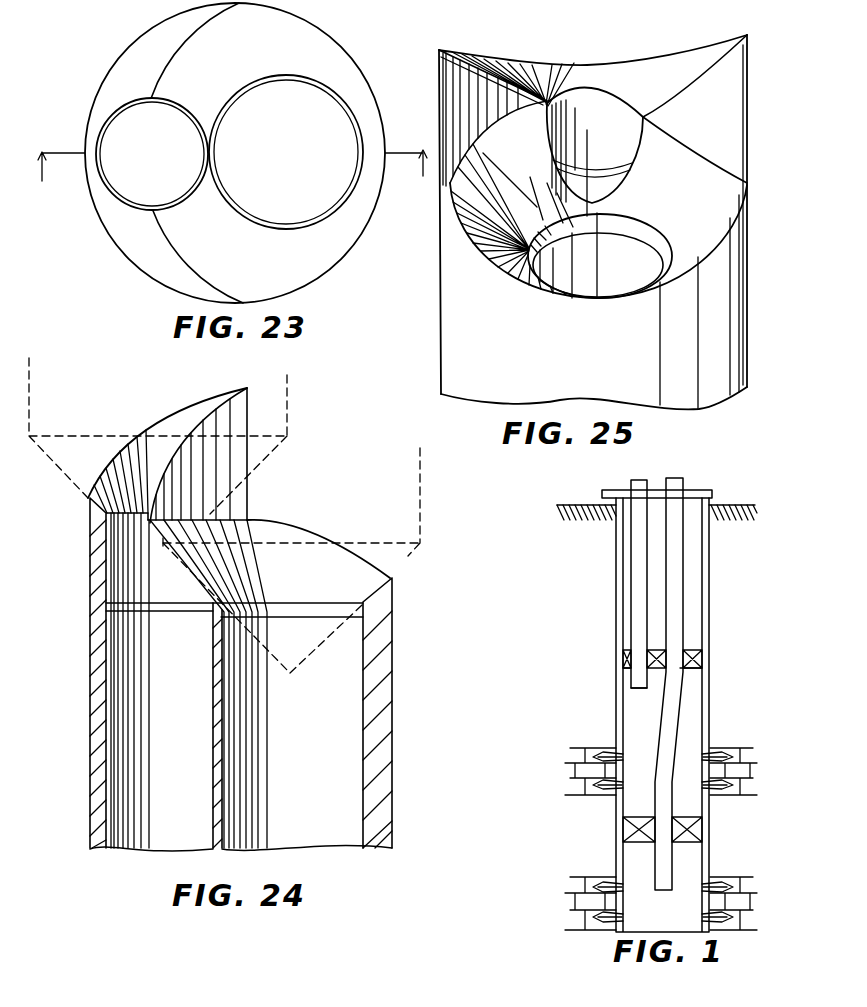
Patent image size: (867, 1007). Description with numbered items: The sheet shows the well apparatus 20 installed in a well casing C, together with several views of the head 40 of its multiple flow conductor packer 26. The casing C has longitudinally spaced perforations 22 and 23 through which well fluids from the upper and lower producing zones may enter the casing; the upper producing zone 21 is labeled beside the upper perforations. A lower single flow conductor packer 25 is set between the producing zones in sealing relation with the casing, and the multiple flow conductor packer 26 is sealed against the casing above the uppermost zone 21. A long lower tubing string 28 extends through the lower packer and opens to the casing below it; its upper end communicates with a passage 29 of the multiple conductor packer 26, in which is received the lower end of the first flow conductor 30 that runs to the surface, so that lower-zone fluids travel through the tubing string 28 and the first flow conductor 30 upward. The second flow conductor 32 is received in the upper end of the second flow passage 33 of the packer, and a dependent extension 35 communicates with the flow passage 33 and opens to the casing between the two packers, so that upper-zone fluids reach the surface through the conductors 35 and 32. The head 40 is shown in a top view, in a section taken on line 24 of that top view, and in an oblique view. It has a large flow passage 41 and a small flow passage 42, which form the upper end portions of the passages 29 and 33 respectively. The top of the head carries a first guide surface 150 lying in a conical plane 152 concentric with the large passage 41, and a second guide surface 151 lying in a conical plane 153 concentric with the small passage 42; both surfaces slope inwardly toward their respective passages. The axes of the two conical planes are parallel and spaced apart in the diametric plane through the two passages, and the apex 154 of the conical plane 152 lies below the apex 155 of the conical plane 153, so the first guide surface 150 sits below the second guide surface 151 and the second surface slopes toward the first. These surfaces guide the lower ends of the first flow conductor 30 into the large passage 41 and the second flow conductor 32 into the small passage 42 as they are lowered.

In FIG. 23, the head 40 is at (110, 67).
In FIG. 25, the head 40 is at (736, 285).
In FIG. 23, the large flow passage 41 is at (285, 79).
In FIG. 25, the large flow passage 41 is at (657, 258).
In FIG. 24, the large flow passage 41 is at (353, 725).
In FIG. 23, the small flow passage 42 is at (178, 110).
In FIG. 25, the small flow passage 42 is at (634, 118).
In FIG. 24, the small flow passage 42 is at (117, 743).
In FIG. 23, the first guide surface 150 is at (313, 267).
In FIG. 25, the first guide surface 150 is at (706, 177).
In FIG. 24, the first guide surface 150 is at (343, 558).
In FIG. 23, the second guide surface 151 is at (132, 248).
In FIG. 25, the second guide surface 151 is at (692, 57).
In FIG. 24, the second guide surface 151 is at (190, 413).
In FIG. 24, the conical plane 152 is at (412, 557).
In FIG. 24, the conical plane 153 is at (277, 447).
In FIG. 24, the apex 154 is at (288, 675).
In FIG. 24, the apex 155 is at (160, 560).
In FIG. 23, the section line 24 is at (232, 165).
In FIG. 1, the well casing C is at (705, 596).
In FIG. 1, the well apparatus 20 is at (627, 591).
In FIG. 1, the first flow conductor 30 is at (683, 562).
In FIG. 1, the second flow conductor 32 is at (650, 484).
In FIG. 1, the multiple flow conductor packer 26 is at (698, 658).
In FIG. 1, the passage 29 is at (678, 667).
In FIG. 1, the second flow passage 33 is at (638, 672).
In FIG. 1, the dependent extension 35 is at (635, 693).
In FIG. 1, the upper producing formation 21 is at (673, 771).
In FIG. 1, the perforations 22 is at (630, 782).
In FIG. 1, the lower tubing string 28 is at (668, 803).
In FIG. 1, the single flow conductor packer 25 is at (623, 833).
In FIG. 1, the perforations 23 is at (628, 918).